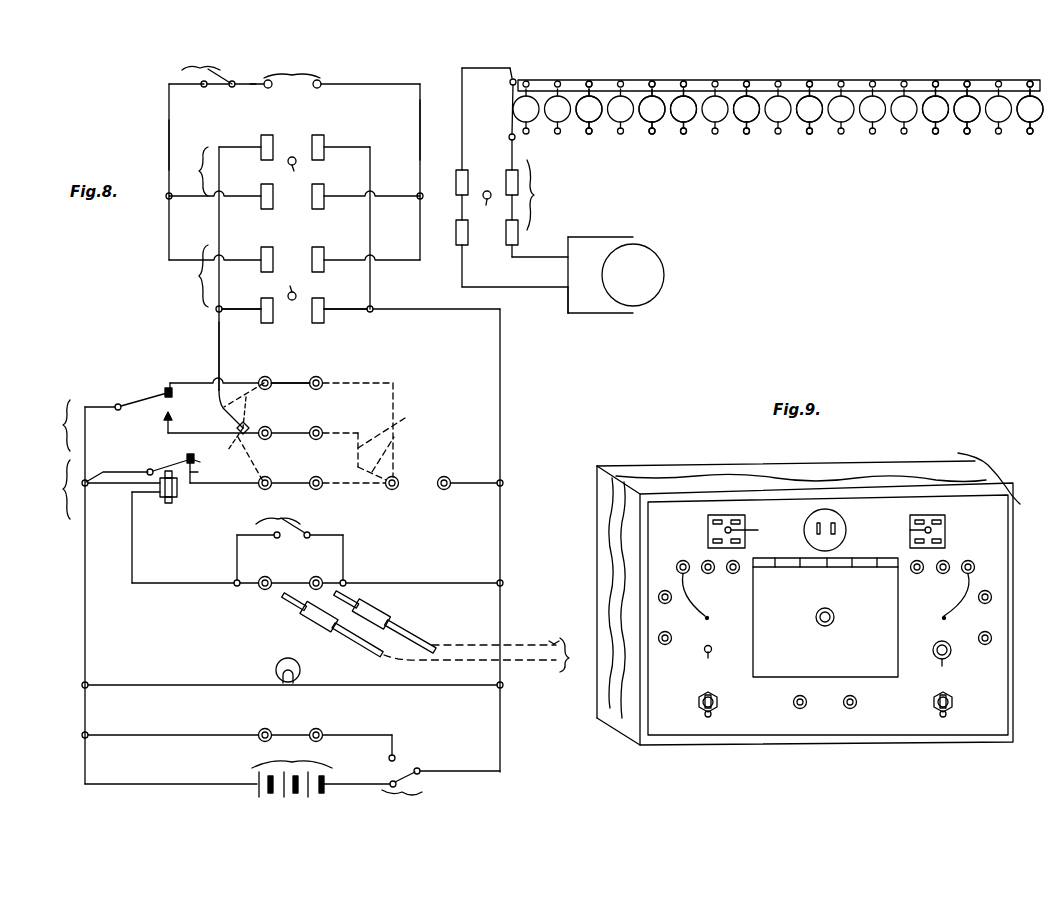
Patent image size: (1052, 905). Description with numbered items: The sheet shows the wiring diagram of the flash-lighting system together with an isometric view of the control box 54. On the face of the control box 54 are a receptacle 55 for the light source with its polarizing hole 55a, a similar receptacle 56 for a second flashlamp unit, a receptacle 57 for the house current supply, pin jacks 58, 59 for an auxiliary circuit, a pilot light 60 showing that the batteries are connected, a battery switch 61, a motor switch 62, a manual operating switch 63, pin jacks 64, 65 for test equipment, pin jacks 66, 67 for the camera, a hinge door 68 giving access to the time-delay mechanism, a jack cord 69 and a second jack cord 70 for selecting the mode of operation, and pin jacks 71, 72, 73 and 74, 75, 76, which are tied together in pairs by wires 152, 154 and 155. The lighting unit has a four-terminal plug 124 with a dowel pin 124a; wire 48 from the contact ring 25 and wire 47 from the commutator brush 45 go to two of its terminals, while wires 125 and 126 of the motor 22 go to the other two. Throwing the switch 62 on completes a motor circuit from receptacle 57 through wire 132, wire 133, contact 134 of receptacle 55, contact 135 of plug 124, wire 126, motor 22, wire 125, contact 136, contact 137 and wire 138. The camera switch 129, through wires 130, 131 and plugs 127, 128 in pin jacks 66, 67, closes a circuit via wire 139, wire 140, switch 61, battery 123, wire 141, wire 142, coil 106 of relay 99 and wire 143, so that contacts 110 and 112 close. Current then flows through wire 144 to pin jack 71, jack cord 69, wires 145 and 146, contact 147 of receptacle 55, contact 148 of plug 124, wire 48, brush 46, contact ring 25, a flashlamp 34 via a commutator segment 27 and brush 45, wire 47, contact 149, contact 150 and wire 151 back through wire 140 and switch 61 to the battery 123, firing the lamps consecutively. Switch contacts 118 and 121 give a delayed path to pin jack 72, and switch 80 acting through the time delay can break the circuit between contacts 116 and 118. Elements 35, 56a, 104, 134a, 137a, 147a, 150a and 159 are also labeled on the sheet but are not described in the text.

In FIG. 8, the motor 22 is at (655, 275).
In FIG. 8, the contact ring 25 is at (798, 80).
In FIG. 8, the commutator segment 27 is at (589, 134).
In FIG. 8, the flashlamp 34 is at (684, 130).
In FIG. 8, the lamp 35 is at (652, 134).
In FIG. 8, the commutator brush 45 is at (509, 137).
In FIG. 8, the brush 46 is at (516, 78).
In FIG. 8, the wire 47 is at (512, 151).
In FIG. 8, the wire 48 is at (462, 111).
In FIG. 9, the control box 54 is at (818, 599).
In FIG. 8, the receptacle 55 is at (193, 276).
In FIG. 9, the receptacle 55 is at (708, 531).
In FIG. 8, the polarizing hole 55a is at (298, 282).
In FIG. 9, the polarizing hole 55a is at (754, 531).
In FIG. 8, the receptacle 56 is at (193, 171).
In FIG. 9, the receptacle 56 is at (945, 530).
In FIG. 8, the socket contact 56a is at (297, 171).
In FIG. 9, the socket contact 56a is at (899, 531).
In FIG. 8, the receptacle 57 is at (327, 68).
In FIG. 9, the receptacle 57 is at (836, 520).
In FIG. 8, the pin jack 58 is at (398, 477).
In FIG. 9, the pin jack 58 is at (985, 604).
In FIG. 8, the pin jack 59 is at (450, 477).
In FIG. 9, the pin jack 59 is at (985, 645).
In FIG. 8, the pilot light 60 is at (276, 668).
In FIG. 9, the pilot light 60 is at (940, 662).
In FIG. 8, the battery switch 61 is at (441, 790).
In FIG. 9, the battery switch 61 is at (934, 705).
In FIG. 8, the motor switch 62 is at (208, 62).
In FIG. 9, the motor switch 62 is at (699, 705).
In FIG. 8, the manual operating switch 63 is at (288, 542).
In FIG. 9, the manual operating switch 63 is at (707, 663).
In FIG. 8, the pin jack 64 is at (264, 728).
In FIG. 9, the pin jack 64 is at (665, 604).
In FIG. 8, the pin jack 65 is at (316, 728).
In FIG. 9, the pin jack 65 is at (665, 645).
In FIG. 8, the pin jack 66 is at (265, 576).
In FIG. 9, the pin jack 66 is at (795, 707).
In FIG. 8, the pin jack 67 is at (316, 576).
In FIG. 9, the pin jack 67 is at (845, 707).
In FIG. 9, the hinge door 68 is at (775, 670).
In FIG. 8, the jack cord 69 is at (209, 455).
In FIG. 9, the jack cord 69 is at (700, 618).
In FIG. 8, the jack cord 70 is at (375, 431).
In FIG. 9, the jack cord 70 is at (950, 616).
In FIG. 8, the pin jack 71 is at (270, 471).
In FIG. 9, the pin jack 71 is at (681, 560).
In FIG. 8, the pin jack 72 is at (267, 424).
In FIG. 9, the pin jack 72 is at (708, 574).
In FIG. 8, the pin jack 73 is at (284, 374).
In FIG. 9, the pin jack 73 is at (733, 574).
In FIG. 8, the pin jack 74 is at (320, 478).
In FIG. 9, the pin jack 74 is at (917, 574).
In FIG. 8, the pin jack 75 is at (322, 430).
In FIG. 9, the pin jack 75 is at (943, 574).
In FIG. 8, the pin jack 76 is at (322, 380).
In FIG. 9, the pin jack 76 is at (971, 561).
In FIG. 8, the switch 80 is at (56, 425).
In FIG. 8, the relay 99 is at (99, 489).
In FIG. 9, the meter adjustment 104 is at (834, 617).
In FIG. 8, the coil 106 is at (168, 503).
In FIG. 8, the contact 110 is at (210, 473).
In FIG. 8, the contact 112 is at (185, 458).
In FIG. 8, the contact 116 is at (165, 391).
In FIG. 8, the switch contact 118 is at (133, 400).
In FIG. 8, the switch contact 121 is at (163, 418).
In FIG. 8, the battery 123 is at (321, 767).
In FIG. 8, the four-terminal plug 124 is at (550, 195).
In FIG. 8, the dowel pin 124a is at (494, 206).
In FIG. 8, the wire 125 is at (600, 236).
In FIG. 8, the wire 126 is at (598, 315).
In FIG. 8, the connecting plug 127 is at (312, 618).
In FIG. 8, the connecting plug 128 is at (375, 613).
In FIG. 8, the camera switch 129 is at (574, 655).
In FIG. 8, the wire 130 is at (528, 664).
In FIG. 8, the wire 131 is at (532, 643).
In FIG. 8, the wire 132 is at (256, 86).
In FIG. 8, the wire 133 is at (169, 145).
In FIG. 8, the contact 134 is at (267, 249).
In FIG. 8, the resistor 134a is at (265, 205).
In FIG. 8, the contact 135 is at (461, 242).
In FIG. 8, the contact 136 is at (510, 241).
In FIG. 8, the contact 137 is at (318, 249).
In FIG. 8, the resistor 137a is at (322, 205).
In FIG. 8, the wire 138 is at (420, 127).
In FIG. 8, the wire 139 is at (433, 581).
In FIG. 8, the wire 140 is at (500, 732).
In FIG. 8, the wire 141 is at (85, 632).
In FIG. 8, the wire 142 is at (112, 486).
In FIG. 8, the wire 143 is at (124, 471).
In FIG. 8, the wire 144 is at (230, 485).
In FIG. 8, the wire 145 is at (219, 348).
In FIG. 8, the wire 146 is at (240, 307).
In FIG. 8, the contact 147 is at (267, 318).
In FIG. 8, the resistor 147a is at (267, 137).
In FIG. 8, the contact 148 is at (460, 192).
In FIG. 8, the contact 149 is at (508, 184).
In FIG. 8, the contact 150 is at (320, 318).
In FIG. 8, the resistor 150a is at (318, 137).
In FIG. 8, the wire 151 is at (346, 307).
In FIG. 8, the wire 152 is at (299, 478).
In FIG. 8, the wire 154 is at (296, 432).
In FIG. 8, the wire 155 is at (296, 382).
In FIG. 8, the switch 159 is at (212, 433).